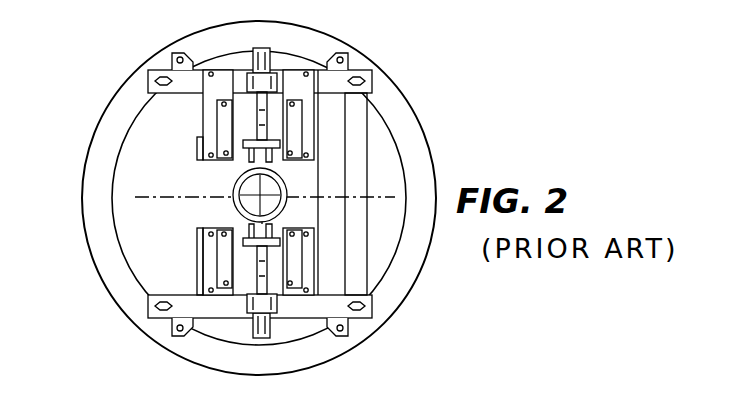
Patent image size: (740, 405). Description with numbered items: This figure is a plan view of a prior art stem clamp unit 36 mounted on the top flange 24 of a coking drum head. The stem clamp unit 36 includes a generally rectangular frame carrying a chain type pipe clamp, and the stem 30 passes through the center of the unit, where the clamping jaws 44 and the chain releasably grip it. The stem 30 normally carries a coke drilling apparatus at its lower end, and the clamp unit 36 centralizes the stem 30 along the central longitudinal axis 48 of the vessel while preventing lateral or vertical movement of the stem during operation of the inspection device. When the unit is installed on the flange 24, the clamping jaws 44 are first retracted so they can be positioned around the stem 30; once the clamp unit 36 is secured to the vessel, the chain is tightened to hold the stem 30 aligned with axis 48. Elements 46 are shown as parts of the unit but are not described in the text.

The flange 24 is at (82, 196).
The stem 30 is at (238, 204).
The stem clamp unit 36 is at (163, 333).
The clamping jaws 44 is at (245, 166).
The actuator assemblies 46 is at (252, 102).
The central longitudinal axis 48 is at (288, 188).